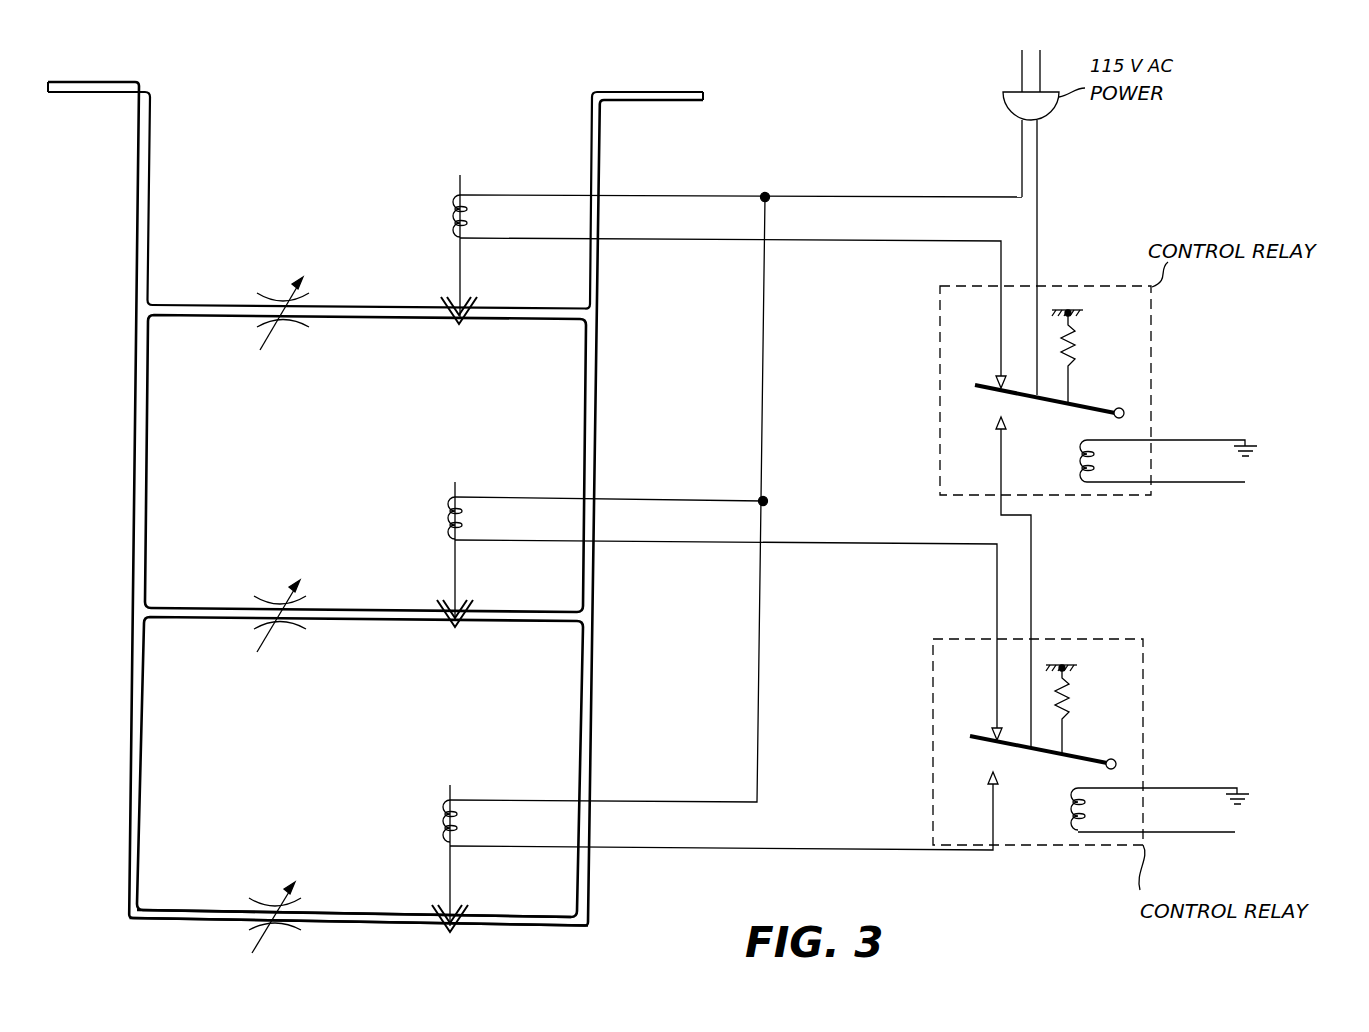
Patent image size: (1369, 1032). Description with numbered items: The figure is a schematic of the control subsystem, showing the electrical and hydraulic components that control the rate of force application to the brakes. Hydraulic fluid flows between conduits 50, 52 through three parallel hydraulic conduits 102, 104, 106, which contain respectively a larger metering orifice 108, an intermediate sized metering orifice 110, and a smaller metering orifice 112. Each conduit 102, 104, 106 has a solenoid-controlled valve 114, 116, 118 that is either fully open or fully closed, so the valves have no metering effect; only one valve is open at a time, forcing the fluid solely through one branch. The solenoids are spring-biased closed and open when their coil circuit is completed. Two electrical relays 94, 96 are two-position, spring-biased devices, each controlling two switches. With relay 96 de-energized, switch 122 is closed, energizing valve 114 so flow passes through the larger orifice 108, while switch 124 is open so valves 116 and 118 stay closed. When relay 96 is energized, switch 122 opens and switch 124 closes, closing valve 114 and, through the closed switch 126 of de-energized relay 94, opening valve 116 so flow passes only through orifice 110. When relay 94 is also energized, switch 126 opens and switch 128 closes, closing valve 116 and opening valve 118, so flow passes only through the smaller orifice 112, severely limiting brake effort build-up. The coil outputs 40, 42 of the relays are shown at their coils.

The conduit 50 is at (83, 92).
The conduit 52 is at (658, 100).
The parallel hydraulic conduit 102 is at (390, 319).
The parallel hydraulic conduit 104 is at (386, 621).
The parallel hydraulic conduit 106 is at (370, 910).
The larger metering orifice 108 is at (283, 283).
The intermediate sized metering orifice 110 is at (273, 590).
The smaller metering orifice 112 is at (273, 895).
The solenoid-controlled valve 114 is at (462, 183).
The solenoid-controlled valve 116 is at (460, 480).
The solenoid-controlled valve 118 is at (455, 785).
The electrical relay 96 is at (1075, 481).
The electrical relay 94 is at (1089, 716).
The switch 122 is at (999, 384).
The switch 124 is at (998, 421).
The switch 126 is at (995, 736).
The switch 128 is at (990, 773).
The relay coil output 40 is at (1232, 484).
The relay coil output 42 is at (1225, 836).